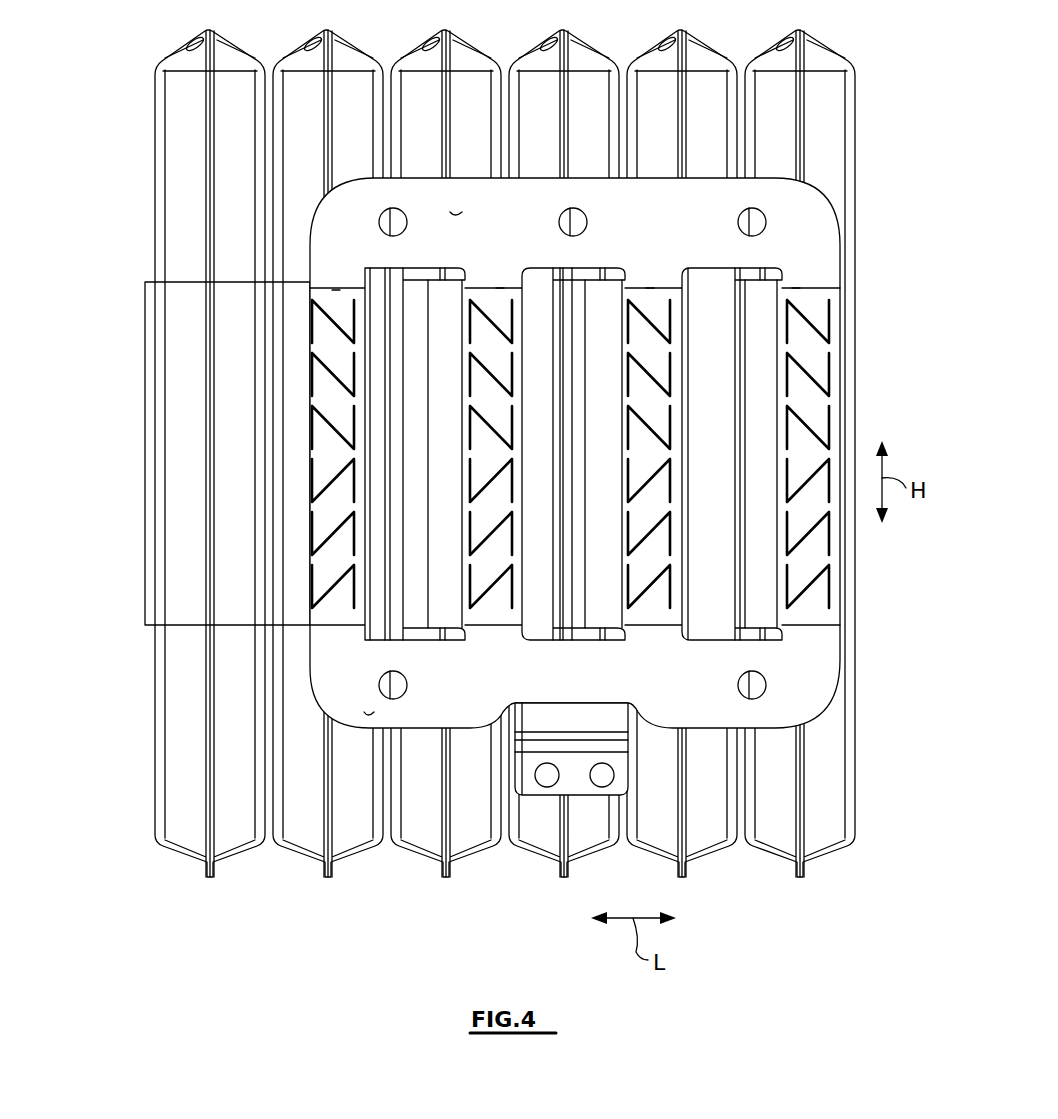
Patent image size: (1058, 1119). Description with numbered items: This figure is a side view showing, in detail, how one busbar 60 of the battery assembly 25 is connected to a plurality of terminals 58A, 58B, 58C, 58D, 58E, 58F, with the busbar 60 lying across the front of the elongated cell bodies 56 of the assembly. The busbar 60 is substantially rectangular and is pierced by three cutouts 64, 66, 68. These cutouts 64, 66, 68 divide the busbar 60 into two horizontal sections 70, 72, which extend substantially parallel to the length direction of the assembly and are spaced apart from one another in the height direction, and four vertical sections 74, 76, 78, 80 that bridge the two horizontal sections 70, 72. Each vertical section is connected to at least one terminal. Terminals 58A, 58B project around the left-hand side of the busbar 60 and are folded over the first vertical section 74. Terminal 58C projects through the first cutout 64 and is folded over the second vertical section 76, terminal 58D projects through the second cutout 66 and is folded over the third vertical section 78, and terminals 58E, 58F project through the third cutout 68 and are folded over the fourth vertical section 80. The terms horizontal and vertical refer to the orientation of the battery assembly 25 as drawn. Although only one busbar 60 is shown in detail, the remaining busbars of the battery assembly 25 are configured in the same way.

The battery assembly 25 is at (502, 459).
The cooling tube 56 is at (186, 47).
The terminal 58A is at (198, 454).
The terminal 58B is at (312, 508).
The terminal 58C is at (465, 525).
The terminal 58D is at (623, 530).
The terminal 58E is at (870, 470).
The terminal 58F is at (820, 614).
The busbar 60 is at (832, 200).
The cutout 64 is at (424, 454).
The cutout 66 is at (572, 454).
The cutout 68 is at (729, 454).
The horizontal section 70 is at (450, 212).
The horizontal section 72 is at (368, 713).
The vertical section 74 is at (335, 290).
The vertical section 76 is at (500, 287).
The vertical section 78 is at (650, 287).
The vertical section 80 is at (796, 285).